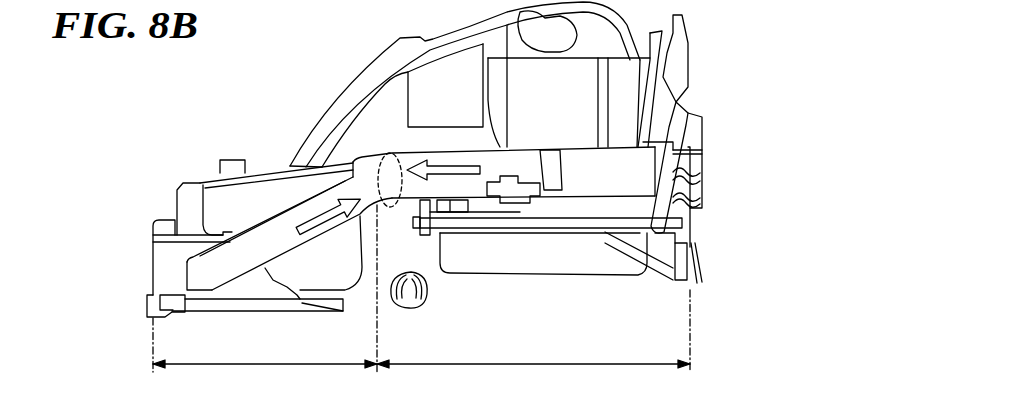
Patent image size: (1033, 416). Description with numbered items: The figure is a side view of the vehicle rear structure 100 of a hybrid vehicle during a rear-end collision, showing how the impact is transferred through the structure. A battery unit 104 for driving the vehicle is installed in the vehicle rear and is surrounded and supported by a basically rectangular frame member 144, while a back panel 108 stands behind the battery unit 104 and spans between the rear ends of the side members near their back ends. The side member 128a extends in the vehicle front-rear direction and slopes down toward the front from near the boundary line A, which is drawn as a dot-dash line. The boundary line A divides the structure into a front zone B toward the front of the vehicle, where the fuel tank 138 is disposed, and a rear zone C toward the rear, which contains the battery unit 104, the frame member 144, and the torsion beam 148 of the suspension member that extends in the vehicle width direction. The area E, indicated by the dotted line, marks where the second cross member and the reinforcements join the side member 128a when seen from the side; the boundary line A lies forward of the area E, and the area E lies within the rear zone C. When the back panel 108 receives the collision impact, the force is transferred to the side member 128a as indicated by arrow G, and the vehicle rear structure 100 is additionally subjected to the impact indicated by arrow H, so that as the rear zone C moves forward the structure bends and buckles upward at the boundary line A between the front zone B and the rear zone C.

The vehicle rear structure 100 is at (126, 242).
The fuel tank 138 is at (213, 200).
The side member 128a is at (283, 240).
The battery unit 104 is at (525, 260).
The frame member 144 is at (578, 232).
The torsion beam 148 is at (411, 296).
The back panel 108 is at (684, 63).
The area E is at (388, 150).
The arrow G is at (447, 166).
The arrow H is at (325, 217).
The boundary line A is at (376, 340).
The front zone B is at (256, 366).
The rear zone C is at (535, 366).